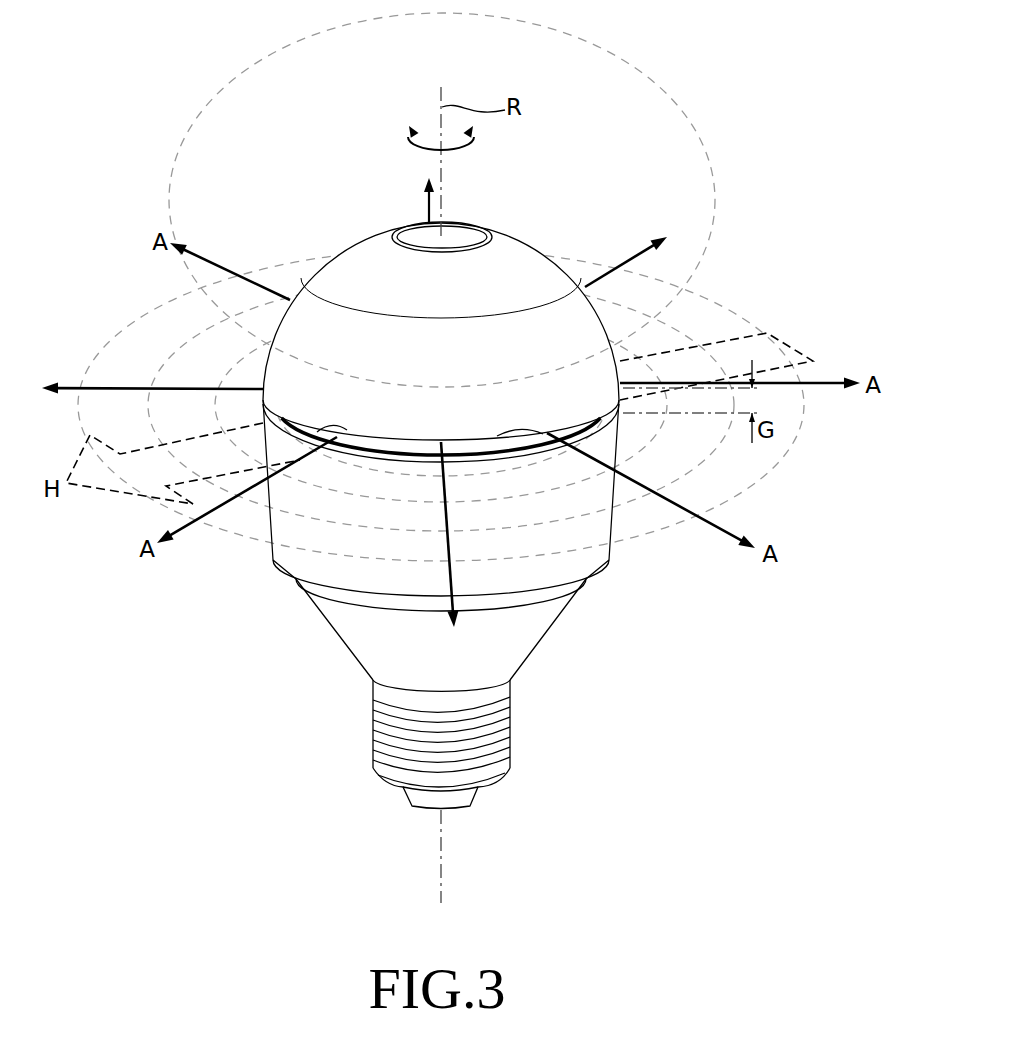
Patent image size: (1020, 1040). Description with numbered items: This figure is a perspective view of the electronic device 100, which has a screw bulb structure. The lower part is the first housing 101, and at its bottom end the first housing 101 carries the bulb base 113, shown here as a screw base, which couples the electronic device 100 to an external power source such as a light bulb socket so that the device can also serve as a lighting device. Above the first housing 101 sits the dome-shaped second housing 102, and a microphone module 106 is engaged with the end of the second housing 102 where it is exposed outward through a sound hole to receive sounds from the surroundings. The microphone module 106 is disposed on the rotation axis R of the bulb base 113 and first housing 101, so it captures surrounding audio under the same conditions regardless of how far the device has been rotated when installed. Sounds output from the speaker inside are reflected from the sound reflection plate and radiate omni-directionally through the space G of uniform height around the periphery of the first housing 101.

The electronic device 100 is at (475, 415).
The first housing 101 is at (270, 563).
The second housing 102 is at (458, 291).
The microphone module 106 is at (472, 230).
The bulb base 113 is at (513, 722).